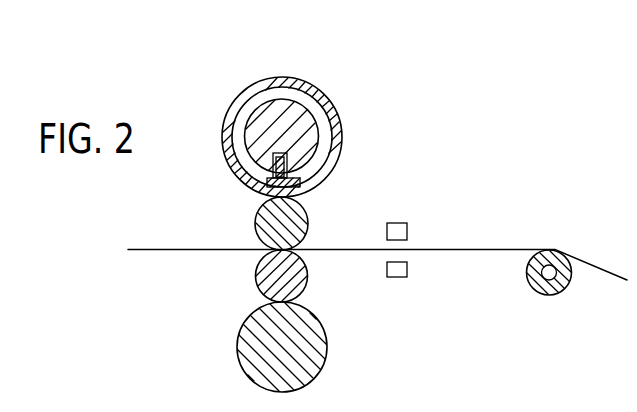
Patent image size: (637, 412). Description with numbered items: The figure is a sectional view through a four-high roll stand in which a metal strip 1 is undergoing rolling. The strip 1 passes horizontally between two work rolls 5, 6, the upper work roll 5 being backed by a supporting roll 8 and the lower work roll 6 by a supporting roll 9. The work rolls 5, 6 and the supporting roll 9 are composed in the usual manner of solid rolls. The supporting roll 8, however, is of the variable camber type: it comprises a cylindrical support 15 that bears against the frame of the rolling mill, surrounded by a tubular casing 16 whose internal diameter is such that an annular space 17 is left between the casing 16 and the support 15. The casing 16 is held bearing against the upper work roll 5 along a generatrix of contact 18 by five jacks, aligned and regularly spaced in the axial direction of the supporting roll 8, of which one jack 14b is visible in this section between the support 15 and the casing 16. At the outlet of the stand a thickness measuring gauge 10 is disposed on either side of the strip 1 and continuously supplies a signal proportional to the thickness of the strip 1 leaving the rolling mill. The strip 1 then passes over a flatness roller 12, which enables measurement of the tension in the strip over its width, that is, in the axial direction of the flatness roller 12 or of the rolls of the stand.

The metal strip 1 is at (213, 250).
The work roll 5 is at (297, 220).
The work roll 6 is at (307, 273).
The supporting roll 8 is at (300, 110).
The supporting roll 9 is at (320, 355).
The thickness measuring gauge 10 is at (405, 233).
The flatness roller 12 is at (549, 252).
The jack 14b is at (300, 179).
The cylindrical support 15 is at (288, 115).
The tubular casing 16 is at (270, 82).
The annular space 17 is at (242, 116).
The generatrix of contact 18 is at (263, 195).